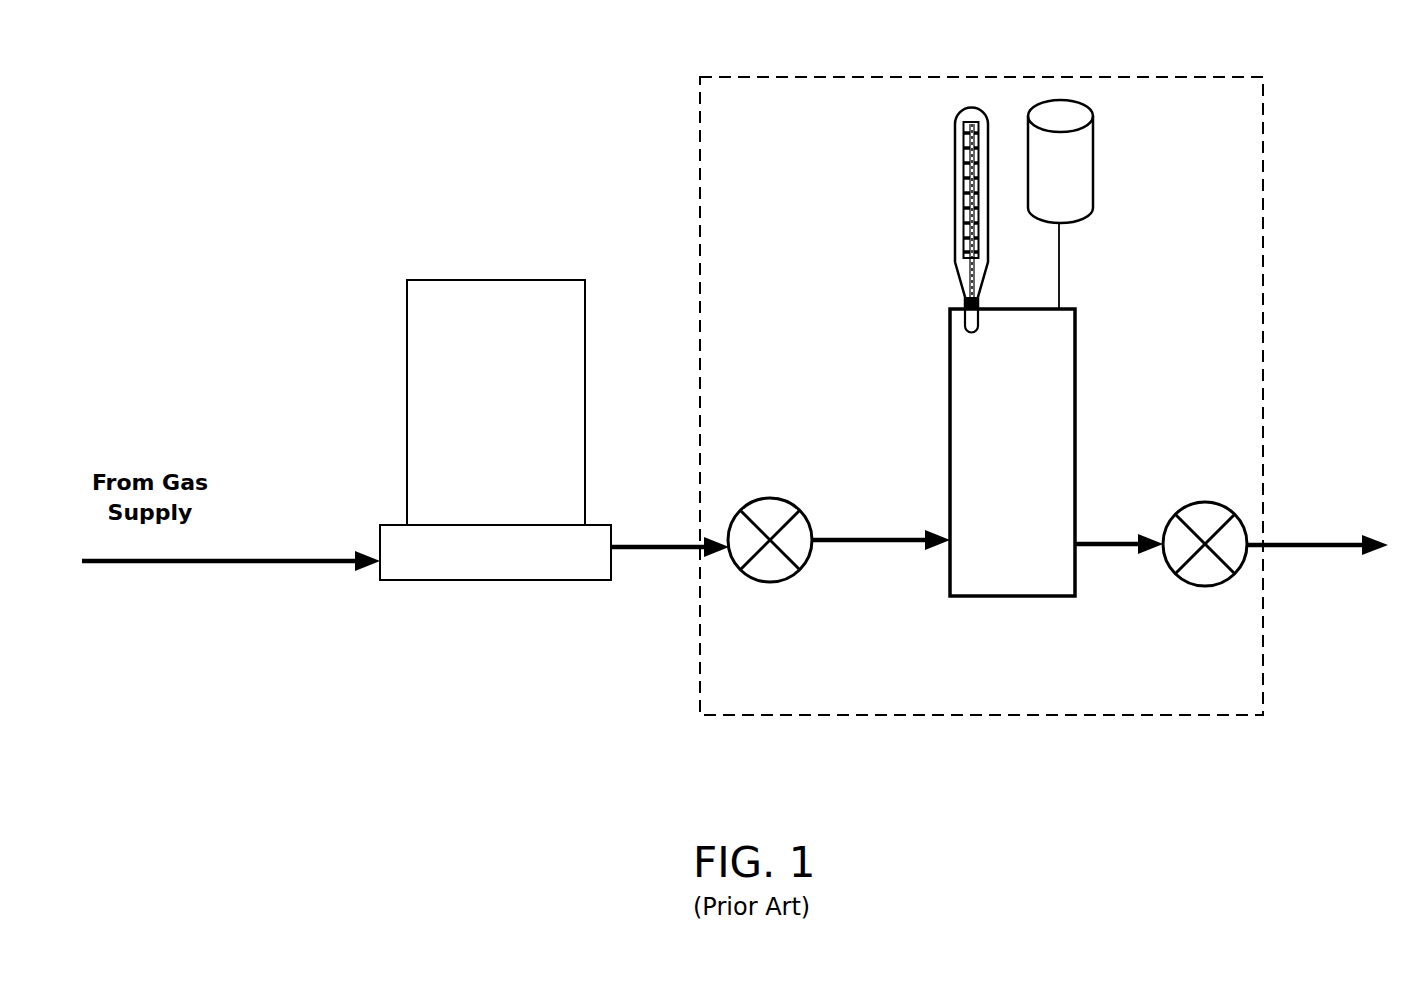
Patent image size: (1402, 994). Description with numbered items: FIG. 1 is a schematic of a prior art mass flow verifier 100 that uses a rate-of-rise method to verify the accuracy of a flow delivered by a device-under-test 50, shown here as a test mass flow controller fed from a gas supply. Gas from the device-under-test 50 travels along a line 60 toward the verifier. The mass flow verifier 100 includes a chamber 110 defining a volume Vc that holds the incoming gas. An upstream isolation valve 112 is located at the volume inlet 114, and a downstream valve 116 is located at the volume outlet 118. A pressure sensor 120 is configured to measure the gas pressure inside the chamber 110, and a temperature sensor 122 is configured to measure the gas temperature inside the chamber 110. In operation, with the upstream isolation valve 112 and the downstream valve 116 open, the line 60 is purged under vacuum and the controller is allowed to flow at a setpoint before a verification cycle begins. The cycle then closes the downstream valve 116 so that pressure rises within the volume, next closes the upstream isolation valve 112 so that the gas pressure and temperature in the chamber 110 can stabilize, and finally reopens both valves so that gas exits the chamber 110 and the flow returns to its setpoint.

The device-under-test 50 is at (452, 279).
The line 60 is at (658, 553).
The mass flow verifier 100 is at (1192, 75).
The chamber 110 is at (1012, 598).
The upstream isolation valve 112 is at (770, 583).
The volume inlet 114 is at (939, 555).
The downstream valve 116 is at (1207, 587).
The volume outlet 118 is at (1082, 553).
The pressure sensor 120 is at (1059, 100).
The temperature sensor 122 is at (971, 100).